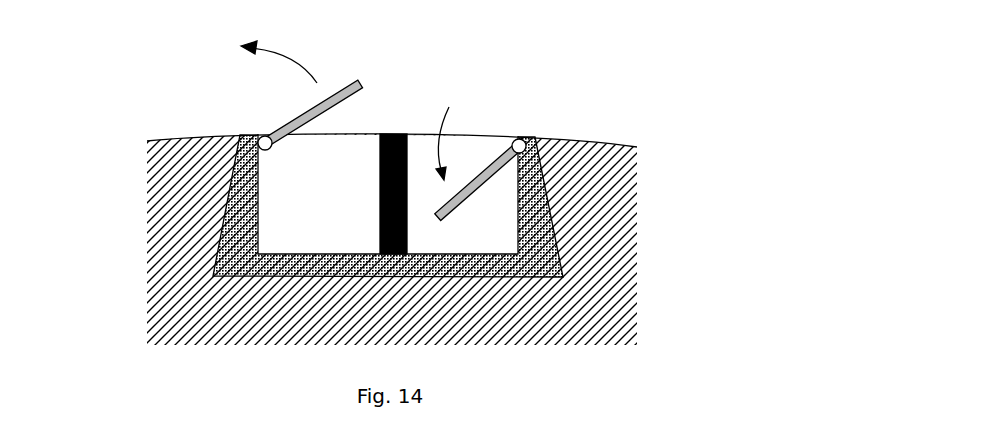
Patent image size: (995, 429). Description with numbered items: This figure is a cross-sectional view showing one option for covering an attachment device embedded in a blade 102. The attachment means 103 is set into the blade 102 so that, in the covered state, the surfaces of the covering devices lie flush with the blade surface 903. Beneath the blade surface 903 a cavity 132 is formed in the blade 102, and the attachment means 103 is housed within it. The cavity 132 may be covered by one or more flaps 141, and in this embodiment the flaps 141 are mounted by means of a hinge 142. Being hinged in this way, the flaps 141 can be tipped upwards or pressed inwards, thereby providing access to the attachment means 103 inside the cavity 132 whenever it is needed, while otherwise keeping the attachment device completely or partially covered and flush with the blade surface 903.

The blade 102 is at (168, 282).
The blade surface 903 is at (185, 138).
The cavity 132 is at (347, 147).
The attachment means 103 is at (233, 135).
The flaps 141 is at (482, 168).
The hinge 142 is at (537, 137).